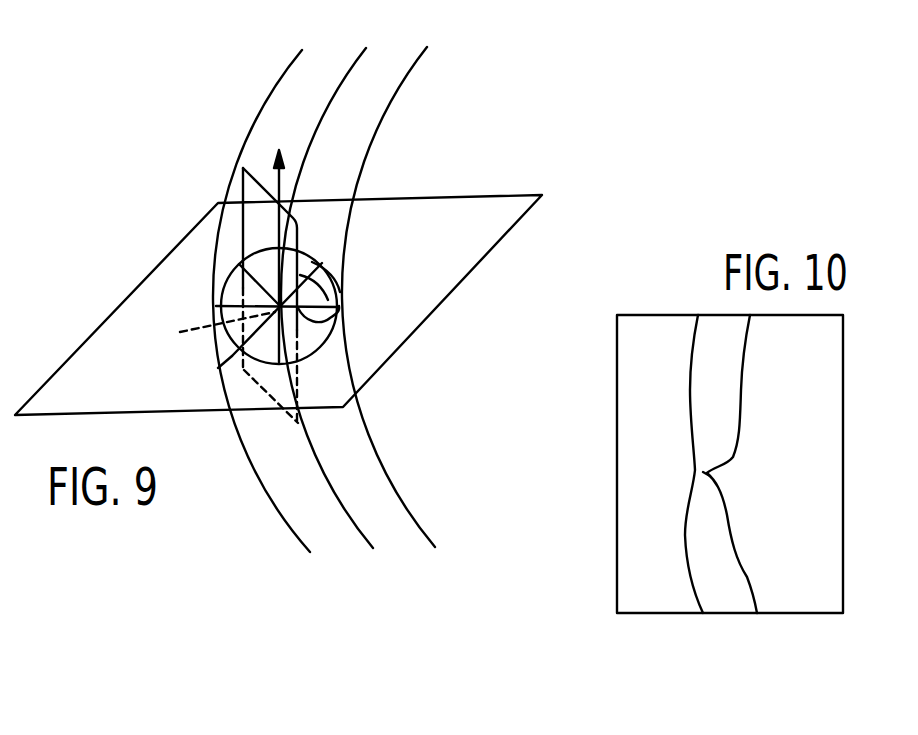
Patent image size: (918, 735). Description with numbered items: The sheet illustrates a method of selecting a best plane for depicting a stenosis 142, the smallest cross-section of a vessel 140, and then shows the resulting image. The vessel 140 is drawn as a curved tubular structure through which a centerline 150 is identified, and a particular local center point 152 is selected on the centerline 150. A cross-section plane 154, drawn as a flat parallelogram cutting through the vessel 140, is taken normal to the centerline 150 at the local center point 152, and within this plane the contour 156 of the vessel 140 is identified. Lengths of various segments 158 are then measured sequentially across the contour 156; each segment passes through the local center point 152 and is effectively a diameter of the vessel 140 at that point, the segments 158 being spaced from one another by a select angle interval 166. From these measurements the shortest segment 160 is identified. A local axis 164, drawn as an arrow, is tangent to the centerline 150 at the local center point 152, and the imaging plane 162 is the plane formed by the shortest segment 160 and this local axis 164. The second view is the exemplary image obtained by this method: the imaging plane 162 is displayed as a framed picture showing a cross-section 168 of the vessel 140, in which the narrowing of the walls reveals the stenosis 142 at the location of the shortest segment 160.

In FIG. 9, the vessel 140 is at (413, 528).
In FIG. 9, the stenosis 142 is at (357, 313).
In FIG. 10, the stenosis 142 is at (724, 476).
In FIG. 9, the centerline 150 is at (361, 540).
In FIG. 9, the local center point 152 is at (206, 333).
In FIG. 9, the cross-section plane 154 is at (521, 218).
In FIG. 9, the contour 156 is at (270, 312).
In FIG. 9, the segments 158 is at (262, 362).
In FIG. 9, the shortest segment 160 is at (278, 289).
In FIG. 10, the shortest segment 160 is at (700, 475).
In FIG. 9, the imaging plane 162 is at (240, 222).
In FIG. 10, the imaging plane 162 is at (617, 506).
In FIG. 9, the local axis 164 is at (282, 180).
In FIG. 9, the angle interval 166 is at (338, 282).
In FIG. 10, the cross-section 168 is at (755, 369).